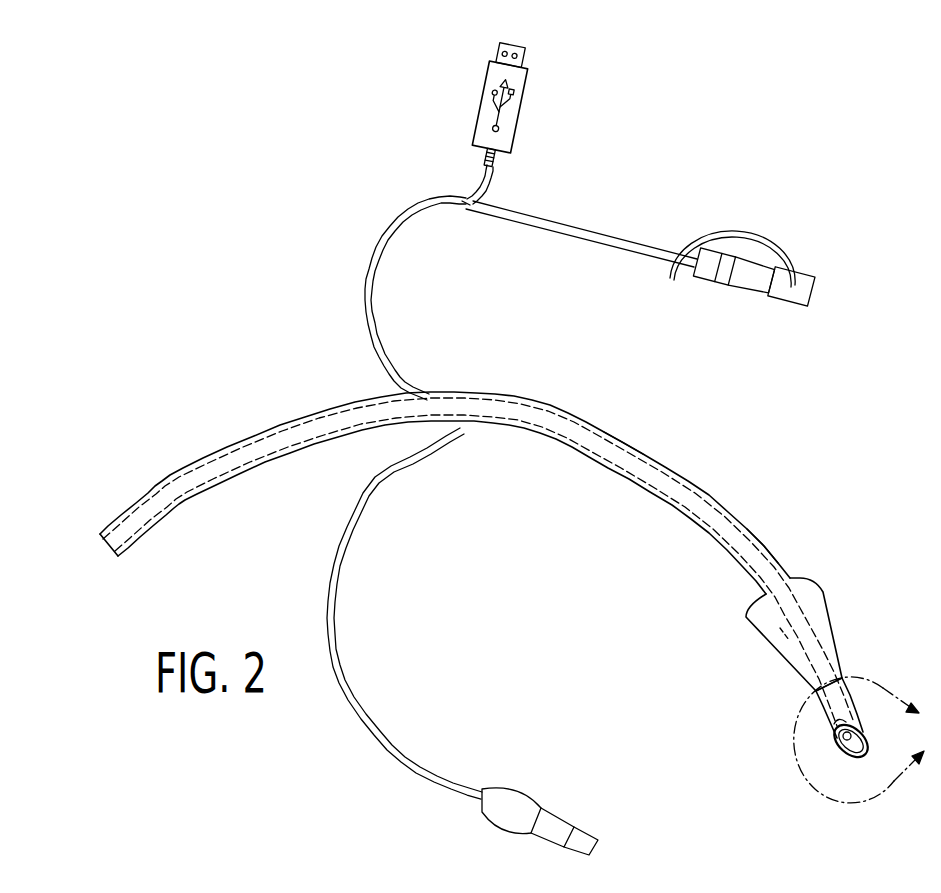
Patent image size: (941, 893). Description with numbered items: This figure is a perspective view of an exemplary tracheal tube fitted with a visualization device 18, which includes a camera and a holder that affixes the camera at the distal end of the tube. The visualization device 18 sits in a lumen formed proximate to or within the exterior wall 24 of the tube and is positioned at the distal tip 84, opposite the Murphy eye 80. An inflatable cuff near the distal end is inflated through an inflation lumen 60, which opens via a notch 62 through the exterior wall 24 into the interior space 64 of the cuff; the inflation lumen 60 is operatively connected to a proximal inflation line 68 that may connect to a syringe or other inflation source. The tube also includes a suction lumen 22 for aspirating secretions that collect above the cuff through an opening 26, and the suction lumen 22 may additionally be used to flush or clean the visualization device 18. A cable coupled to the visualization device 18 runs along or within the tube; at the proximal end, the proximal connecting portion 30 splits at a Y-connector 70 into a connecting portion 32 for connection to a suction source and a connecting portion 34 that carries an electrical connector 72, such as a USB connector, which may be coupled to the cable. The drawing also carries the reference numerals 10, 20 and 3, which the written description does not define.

The tracheal tube system 10 is at (103, 330).
The visualization device 18 is at (830, 721).
The tube wall 20 is at (852, 692).
The suction lumen 22 is at (476, 559).
The exterior wall 24 is at (620, 440).
The opening 26 is at (779, 563).
The proximal connecting portion 30 is at (366, 297).
The connecting portion 32 is at (571, 229).
The connecting portion 34 is at (481, 182).
The inflation lumen 60 is at (627, 478).
The notch 62 is at (780, 637).
The interior space of the cuff 64 is at (750, 612).
The proximal inflation line 68 is at (381, 482).
The Y-connector 70 is at (458, 206).
The electrical connector 72 is at (482, 103).
The Murphy eye 80 is at (840, 751).
The distal tip 84 is at (852, 766).
The section line 3- 3 is at (867, 740).